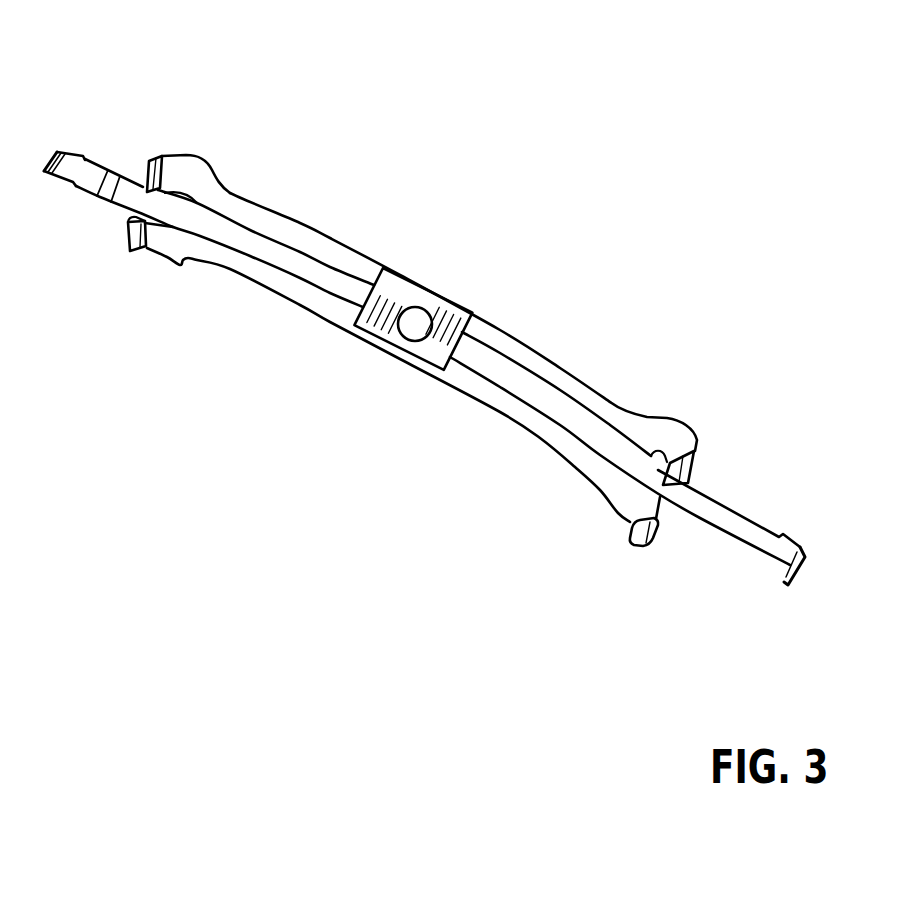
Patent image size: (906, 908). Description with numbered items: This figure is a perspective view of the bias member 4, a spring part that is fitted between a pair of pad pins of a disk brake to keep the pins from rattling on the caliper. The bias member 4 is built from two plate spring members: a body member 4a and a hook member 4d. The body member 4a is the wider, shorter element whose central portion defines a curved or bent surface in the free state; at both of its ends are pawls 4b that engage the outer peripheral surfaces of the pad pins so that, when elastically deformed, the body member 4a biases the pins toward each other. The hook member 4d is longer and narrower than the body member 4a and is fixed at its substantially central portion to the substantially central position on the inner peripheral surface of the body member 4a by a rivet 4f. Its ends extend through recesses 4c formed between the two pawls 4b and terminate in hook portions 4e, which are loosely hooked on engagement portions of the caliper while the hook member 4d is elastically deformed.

The bias member 4 is at (263, 181).
The body member 4a is at (341, 250).
The pawl 4b is at (173, 174).
The recess 4c is at (130, 219).
The hook member 4d is at (266, 248).
The hook portion 4e is at (47, 162).
The rivet 4f is at (418, 322).